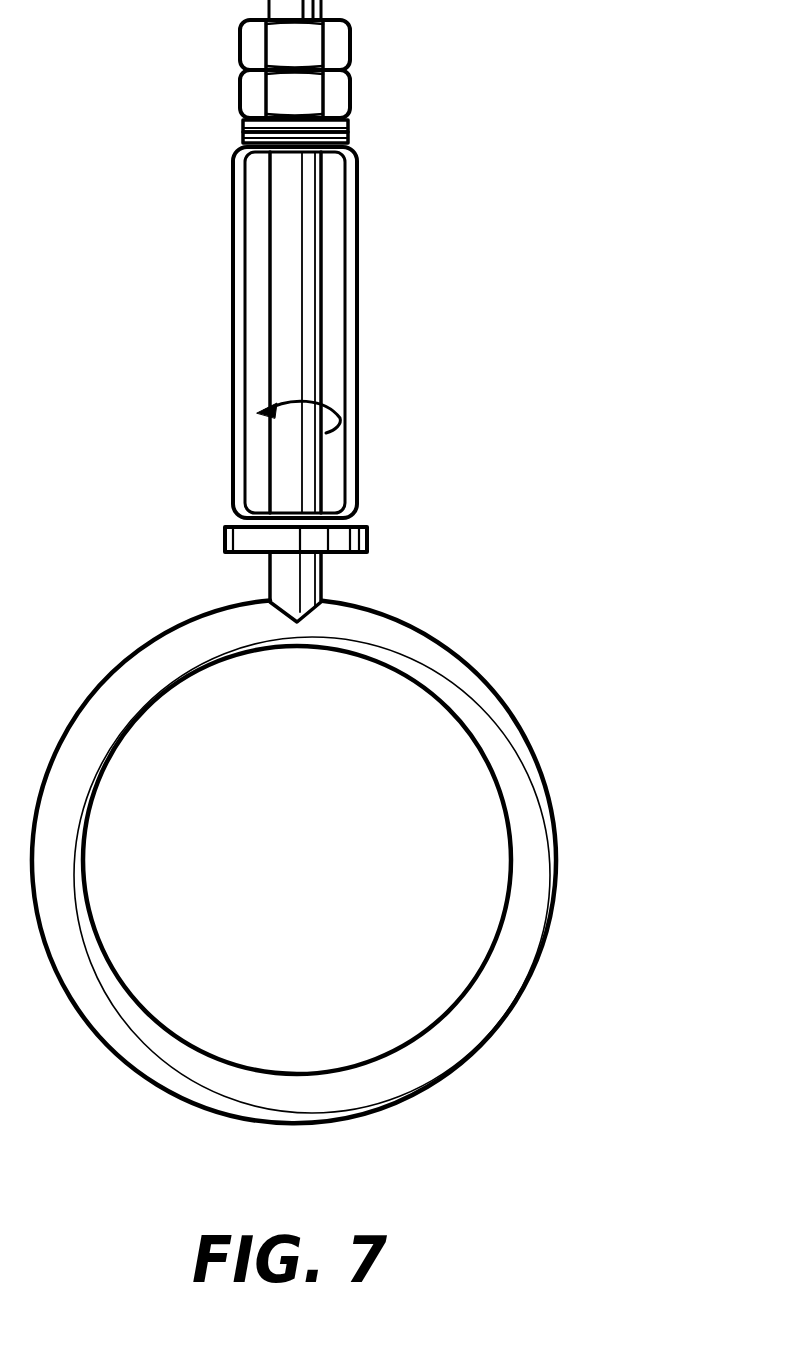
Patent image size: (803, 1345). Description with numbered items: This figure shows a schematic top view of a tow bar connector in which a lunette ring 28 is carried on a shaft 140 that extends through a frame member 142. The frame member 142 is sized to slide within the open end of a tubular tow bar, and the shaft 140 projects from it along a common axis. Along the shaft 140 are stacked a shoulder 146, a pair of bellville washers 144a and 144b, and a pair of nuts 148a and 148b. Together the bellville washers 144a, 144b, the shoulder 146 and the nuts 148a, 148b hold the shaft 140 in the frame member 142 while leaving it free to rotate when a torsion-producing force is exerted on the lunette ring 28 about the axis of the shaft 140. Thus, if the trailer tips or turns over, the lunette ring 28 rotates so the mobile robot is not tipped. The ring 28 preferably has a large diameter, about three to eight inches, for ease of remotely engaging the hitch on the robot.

The lunette ring 28 is at (487, 713).
The shaft 140 is at (307, 285).
The frame member 142 is at (357, 394).
The bellville washer 144a is at (244, 128).
The bellville washer 144b is at (348, 137).
The shoulder 146 is at (368, 535).
The nut 148a is at (241, 46).
The nut 148b is at (352, 92).